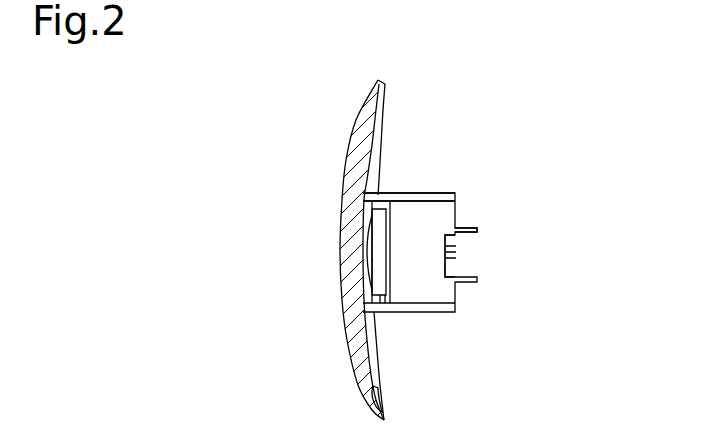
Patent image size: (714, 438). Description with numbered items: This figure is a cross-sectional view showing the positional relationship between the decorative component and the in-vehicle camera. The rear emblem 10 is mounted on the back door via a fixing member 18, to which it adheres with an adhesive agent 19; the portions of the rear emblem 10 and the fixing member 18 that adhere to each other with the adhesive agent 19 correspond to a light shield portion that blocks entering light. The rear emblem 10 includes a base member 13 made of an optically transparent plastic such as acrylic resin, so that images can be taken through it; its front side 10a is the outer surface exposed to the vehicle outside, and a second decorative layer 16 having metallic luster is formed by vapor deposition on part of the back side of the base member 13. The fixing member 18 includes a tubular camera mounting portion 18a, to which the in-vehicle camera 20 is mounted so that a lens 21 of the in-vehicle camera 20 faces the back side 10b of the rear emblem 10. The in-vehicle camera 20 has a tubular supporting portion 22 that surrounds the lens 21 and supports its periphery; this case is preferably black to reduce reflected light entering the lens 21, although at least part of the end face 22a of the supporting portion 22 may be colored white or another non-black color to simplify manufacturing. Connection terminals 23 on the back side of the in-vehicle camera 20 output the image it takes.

The rear emblem 10 is at (351, 134).
The front side 10a is at (343, 223).
The back side 10b is at (380, 137).
The base member 13 is at (343, 352).
The second decorative layer 16 is at (382, 398).
The fixing member 18 is at (378, 168).
The camera mounting portion 18a is at (440, 193).
The adhesive agent 19 is at (373, 362).
The in-vehicle camera 20 is at (463, 219).
The lens 21 is at (352, 232).
The supporting portion 22 is at (372, 305).
The end face 22a is at (366, 272).
The connection terminals 23 is at (459, 253).